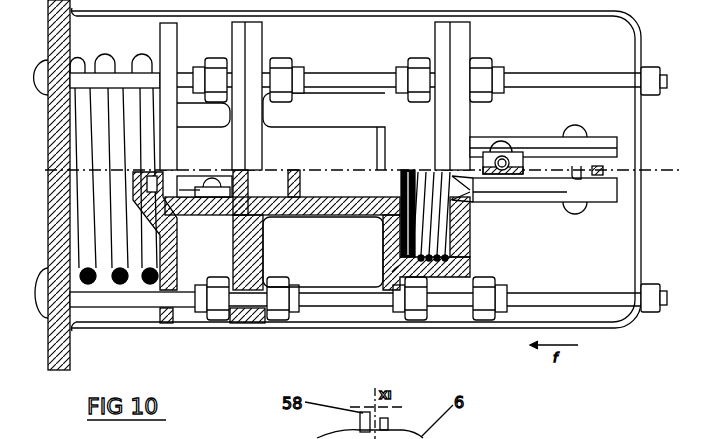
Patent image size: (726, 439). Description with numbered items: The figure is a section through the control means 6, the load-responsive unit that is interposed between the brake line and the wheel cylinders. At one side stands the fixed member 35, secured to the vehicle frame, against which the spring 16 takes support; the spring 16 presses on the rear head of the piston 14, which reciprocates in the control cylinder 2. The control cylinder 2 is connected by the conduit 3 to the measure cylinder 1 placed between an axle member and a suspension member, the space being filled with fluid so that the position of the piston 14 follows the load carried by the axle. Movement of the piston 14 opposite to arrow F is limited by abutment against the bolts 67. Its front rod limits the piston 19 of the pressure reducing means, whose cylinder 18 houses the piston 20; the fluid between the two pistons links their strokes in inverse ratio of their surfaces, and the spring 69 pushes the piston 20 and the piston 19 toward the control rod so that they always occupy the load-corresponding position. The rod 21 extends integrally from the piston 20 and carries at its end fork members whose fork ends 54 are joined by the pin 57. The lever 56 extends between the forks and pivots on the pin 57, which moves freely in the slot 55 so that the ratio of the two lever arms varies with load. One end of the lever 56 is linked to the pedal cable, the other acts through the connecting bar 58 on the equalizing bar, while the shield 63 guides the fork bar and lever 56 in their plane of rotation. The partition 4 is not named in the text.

The measure cylinder 1 is at (246, 199).
The control cylinder 2 is at (202, 197).
The conduit 3 is at (219, 190).
The partition wall 4 is at (303, 216).
The control means 6 is at (600, 203).
The piston 14 is at (155, 231).
The spring 16 is at (108, 62).
The cylinder 18 is at (347, 188).
The piston 19 is at (303, 176).
The piston 20 is at (400, 183).
The rod 21 is at (427, 170).
The fixed member 35 is at (48, 13).
The fork ends 54 is at (615, 148).
The slot 55 is at (530, 173).
The lever 56 is at (606, 172).
The pin 57 is at (573, 177).
The connecting bar 58 is at (510, 168).
The shield 63 is at (598, 137).
The bolts 67 is at (218, 321).
The spring 69 is at (389, 277).